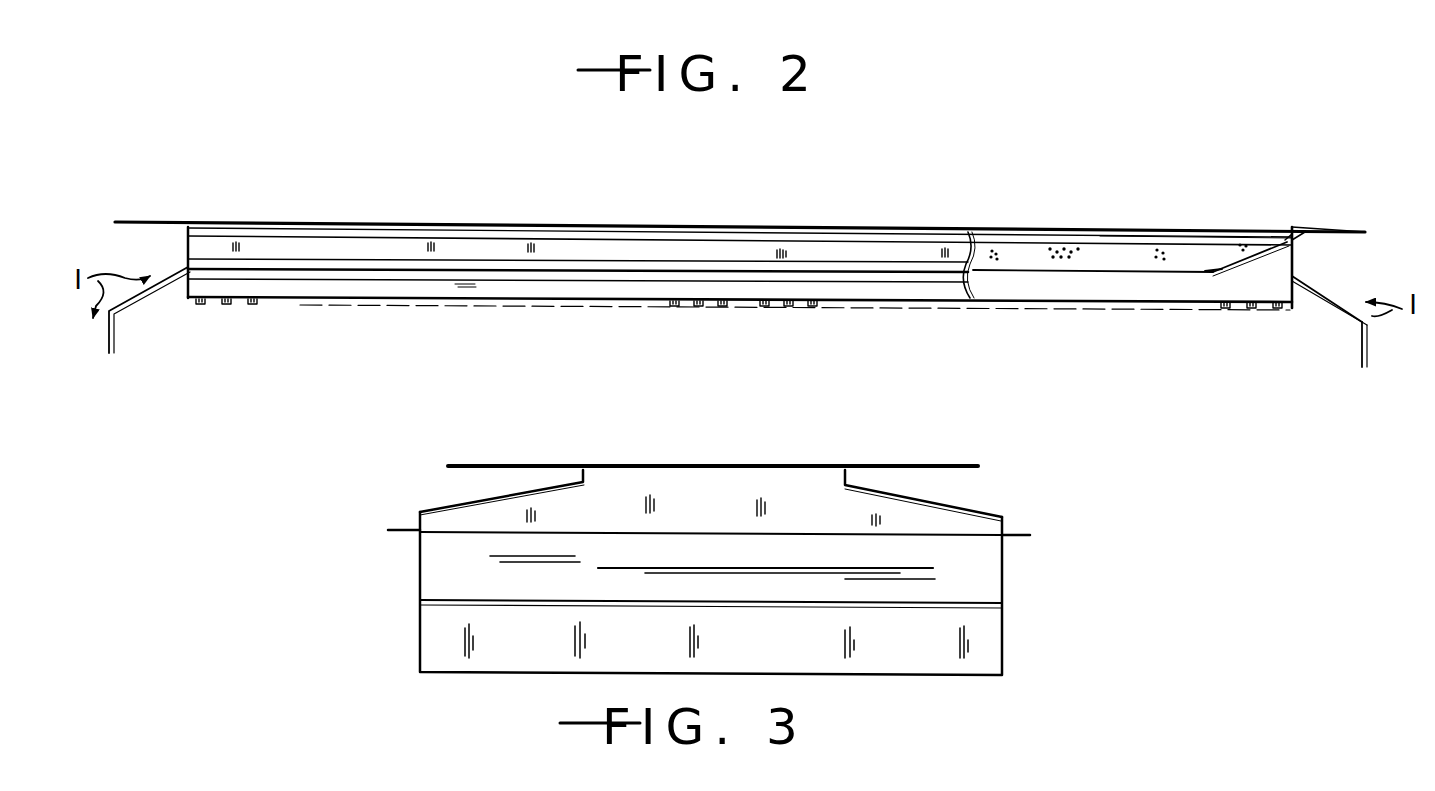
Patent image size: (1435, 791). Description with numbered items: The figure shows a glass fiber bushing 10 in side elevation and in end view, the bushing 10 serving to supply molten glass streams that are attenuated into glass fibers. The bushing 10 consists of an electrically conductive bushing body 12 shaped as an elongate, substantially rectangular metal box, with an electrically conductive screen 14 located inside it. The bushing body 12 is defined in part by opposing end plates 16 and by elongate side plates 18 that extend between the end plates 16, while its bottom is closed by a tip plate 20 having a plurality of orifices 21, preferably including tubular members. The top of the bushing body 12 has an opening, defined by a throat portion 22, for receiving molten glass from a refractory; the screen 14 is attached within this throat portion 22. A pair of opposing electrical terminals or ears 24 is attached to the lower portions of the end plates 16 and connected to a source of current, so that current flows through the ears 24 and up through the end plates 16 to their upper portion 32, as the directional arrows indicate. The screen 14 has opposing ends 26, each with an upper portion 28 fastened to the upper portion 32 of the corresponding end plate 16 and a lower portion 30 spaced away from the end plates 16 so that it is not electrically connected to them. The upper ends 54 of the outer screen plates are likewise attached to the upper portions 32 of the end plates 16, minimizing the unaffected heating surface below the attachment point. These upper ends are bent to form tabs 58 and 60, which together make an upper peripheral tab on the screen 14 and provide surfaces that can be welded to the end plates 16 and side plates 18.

In FIG. 2, the bushing 10 is at (1141, 134).
In FIG. 3, the bushing 10 is at (1006, 460).
In FIG. 2, the bushing body 12 is at (1347, 267).
In FIG. 3, the bushing body 12 is at (1006, 497).
In FIG. 2, the screen 14 is at (1081, 228).
In FIG. 2, the end plates 16 is at (180, 237).
In FIG. 3, the end plates 16 is at (798, 507).
In FIG. 2, the side plates 18 is at (398, 243).
In FIG. 3, the side plates 18 is at (415, 572).
In FIG. 2, the tip plate 20 is at (192, 304).
In FIG. 2, the orifices 21 is at (258, 304).
In FIG. 2, the throat portion 22 is at (1160, 226).
In FIG. 2, the ears 24 is at (96, 342).
In FIG. 3, the ears 24 is at (985, 643).
In FIG. 2, the ends 26 is at (1257, 268).
In FIG. 2, the upper portion 28 is at (1272, 224).
In FIG. 2, the lower portion 30 is at (1213, 278).
In FIG. 2, the upper portion 32 is at (1300, 232).
In FIG. 3, the upper portion 32 is at (631, 486).
In FIG. 2, the upper ends 54 is at (1306, 230).
In FIG. 2, the tabs 58 is at (1000, 232).
In FIG. 2, the tabs 60 is at (1290, 232).